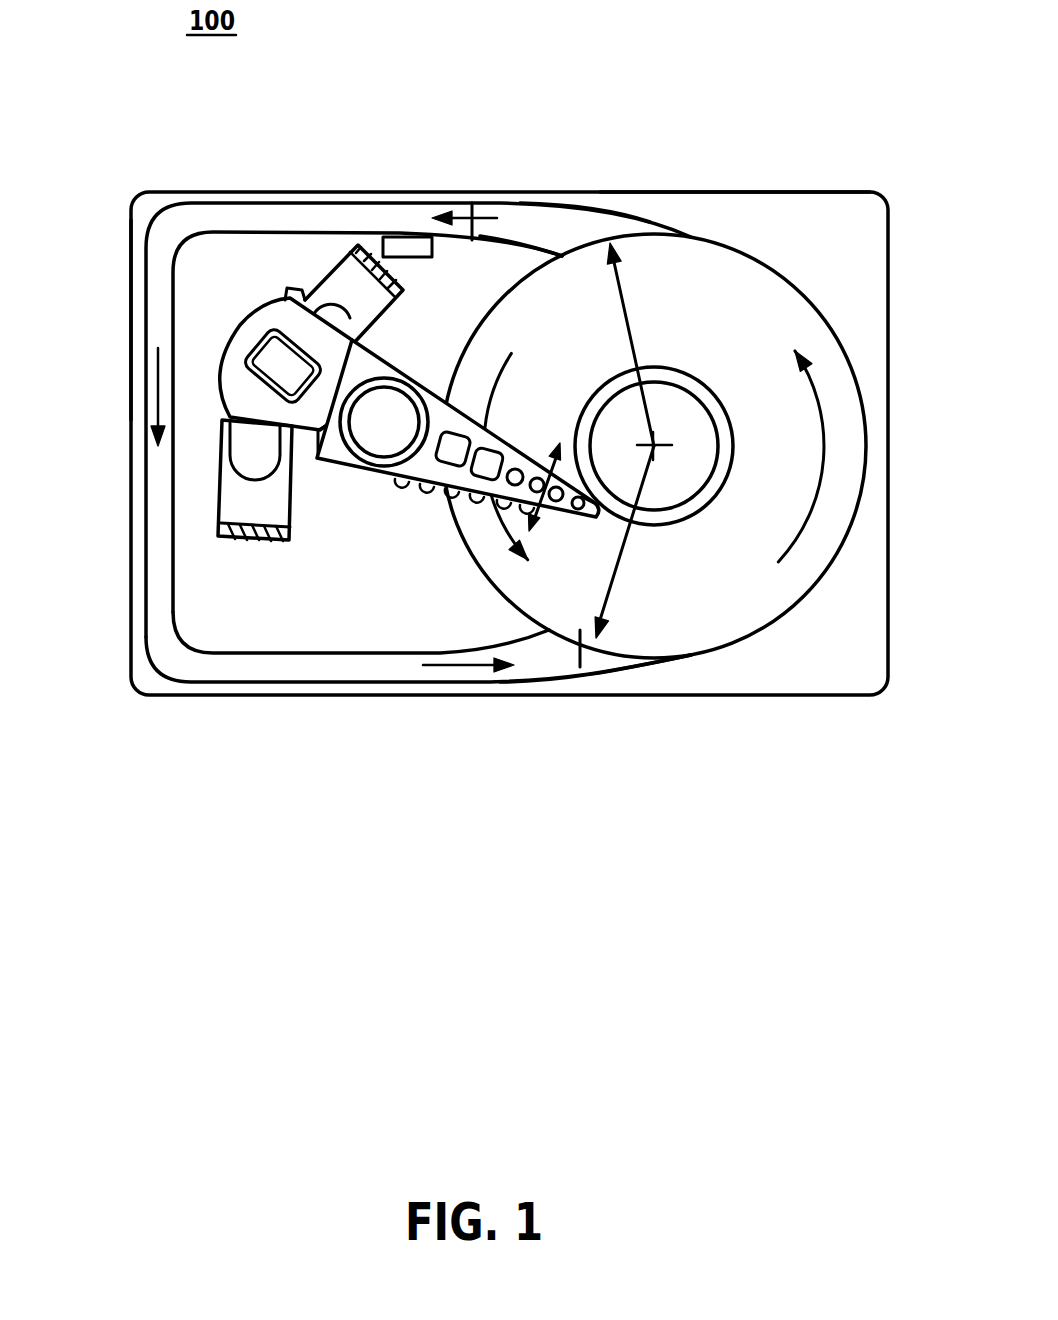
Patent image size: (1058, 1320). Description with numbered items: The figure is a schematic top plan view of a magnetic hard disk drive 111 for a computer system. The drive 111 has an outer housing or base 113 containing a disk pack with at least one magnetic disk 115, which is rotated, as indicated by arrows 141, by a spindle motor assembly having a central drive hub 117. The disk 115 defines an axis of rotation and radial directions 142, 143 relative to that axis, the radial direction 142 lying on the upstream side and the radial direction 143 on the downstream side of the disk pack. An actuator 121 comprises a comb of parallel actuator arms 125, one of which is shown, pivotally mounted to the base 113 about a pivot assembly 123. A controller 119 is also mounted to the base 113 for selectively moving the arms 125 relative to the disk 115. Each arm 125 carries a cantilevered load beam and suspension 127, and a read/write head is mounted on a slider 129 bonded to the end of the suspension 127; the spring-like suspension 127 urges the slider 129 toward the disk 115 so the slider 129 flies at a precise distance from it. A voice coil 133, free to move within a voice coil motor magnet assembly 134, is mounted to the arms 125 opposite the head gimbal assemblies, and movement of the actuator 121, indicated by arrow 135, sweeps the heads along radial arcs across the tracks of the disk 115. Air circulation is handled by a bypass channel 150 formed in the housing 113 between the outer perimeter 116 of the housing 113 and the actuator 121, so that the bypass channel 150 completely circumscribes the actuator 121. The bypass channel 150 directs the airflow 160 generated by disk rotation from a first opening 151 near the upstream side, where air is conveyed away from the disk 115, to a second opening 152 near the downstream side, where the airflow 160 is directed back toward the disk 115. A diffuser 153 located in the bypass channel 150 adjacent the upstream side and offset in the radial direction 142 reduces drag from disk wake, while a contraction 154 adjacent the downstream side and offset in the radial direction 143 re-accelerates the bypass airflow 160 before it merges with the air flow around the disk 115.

The hard disk drive 111 is at (890, 560).
The housing 113 is at (728, 190).
The magnetic disk 115 is at (742, 272).
The outer perimeter 116 is at (128, 243).
The central drive hub 117 is at (653, 367).
The controller 119 is at (425, 257).
The actuator 121 is at (312, 547).
The pivot assembly 123 is at (372, 471).
The actuator arm 125 is at (447, 402).
The suspension 127 is at (493, 432).
The slider 129 is at (583, 513).
The voice coil 133 is at (248, 320).
The voice coil motor magnet assembly 134 is at (343, 278).
The arrow indicating actuator movement 135 is at (523, 518).
The arrows indicating disk rotation 141 is at (503, 360).
The radial direction 142 is at (625, 307).
The radial direction 143 is at (617, 583).
The bypass channel 150 is at (405, 218).
The first opening 151 is at (560, 252).
The second opening 152 is at (580, 667).
The diffuser 153 is at (560, 207).
The contraction 154 is at (535, 665).
The airflow 160 is at (157, 374).